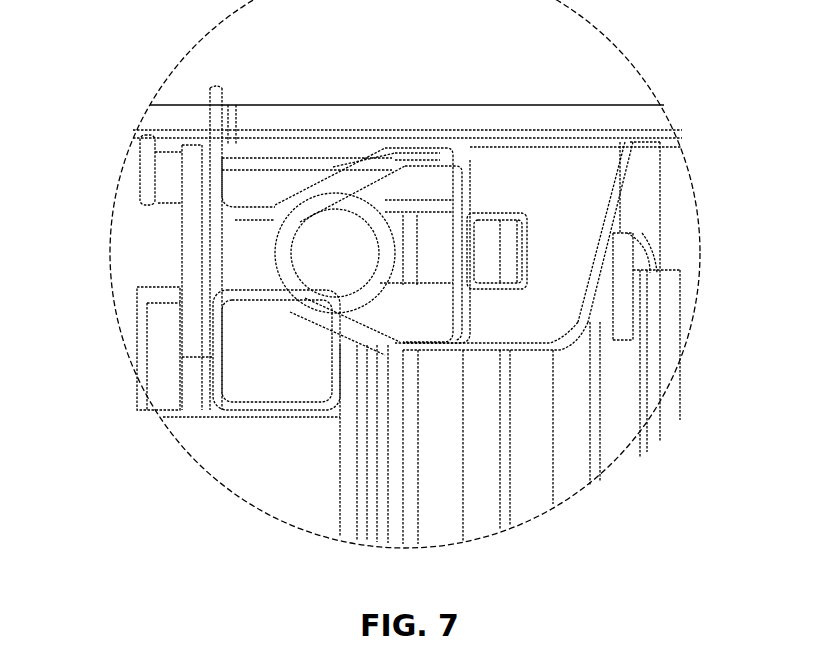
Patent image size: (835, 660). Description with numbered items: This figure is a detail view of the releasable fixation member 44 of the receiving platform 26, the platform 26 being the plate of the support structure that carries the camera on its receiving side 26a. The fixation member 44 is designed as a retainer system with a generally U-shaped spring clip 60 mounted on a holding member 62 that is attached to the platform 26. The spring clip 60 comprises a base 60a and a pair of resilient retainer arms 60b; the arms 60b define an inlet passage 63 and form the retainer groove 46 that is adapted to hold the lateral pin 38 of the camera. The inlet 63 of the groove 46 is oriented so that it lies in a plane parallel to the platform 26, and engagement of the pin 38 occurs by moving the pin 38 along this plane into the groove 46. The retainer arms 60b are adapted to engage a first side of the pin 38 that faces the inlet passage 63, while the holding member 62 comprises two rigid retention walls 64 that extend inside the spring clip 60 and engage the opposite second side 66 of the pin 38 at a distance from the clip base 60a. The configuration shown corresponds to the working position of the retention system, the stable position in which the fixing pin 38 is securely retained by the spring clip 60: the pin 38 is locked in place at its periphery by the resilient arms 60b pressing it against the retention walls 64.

The receiving platform 26 is at (347, 120).
The receiving side 26a is at (655, 142).
The lateral pin 38 is at (320, 275).
The releasable fixation member 44 is at (491, 100).
The snap-fit receiving groove 46 is at (343, 320).
The spring clip 60 is at (420, 147).
The clip base 60a is at (460, 182).
The resilient retainer arms 60b is at (340, 172).
The holding member 62 is at (583, 175).
The inlet passage 63 is at (237, 270).
The rigid retention walls 64 is at (280, 232).
The second side of pin 66 is at (380, 218).